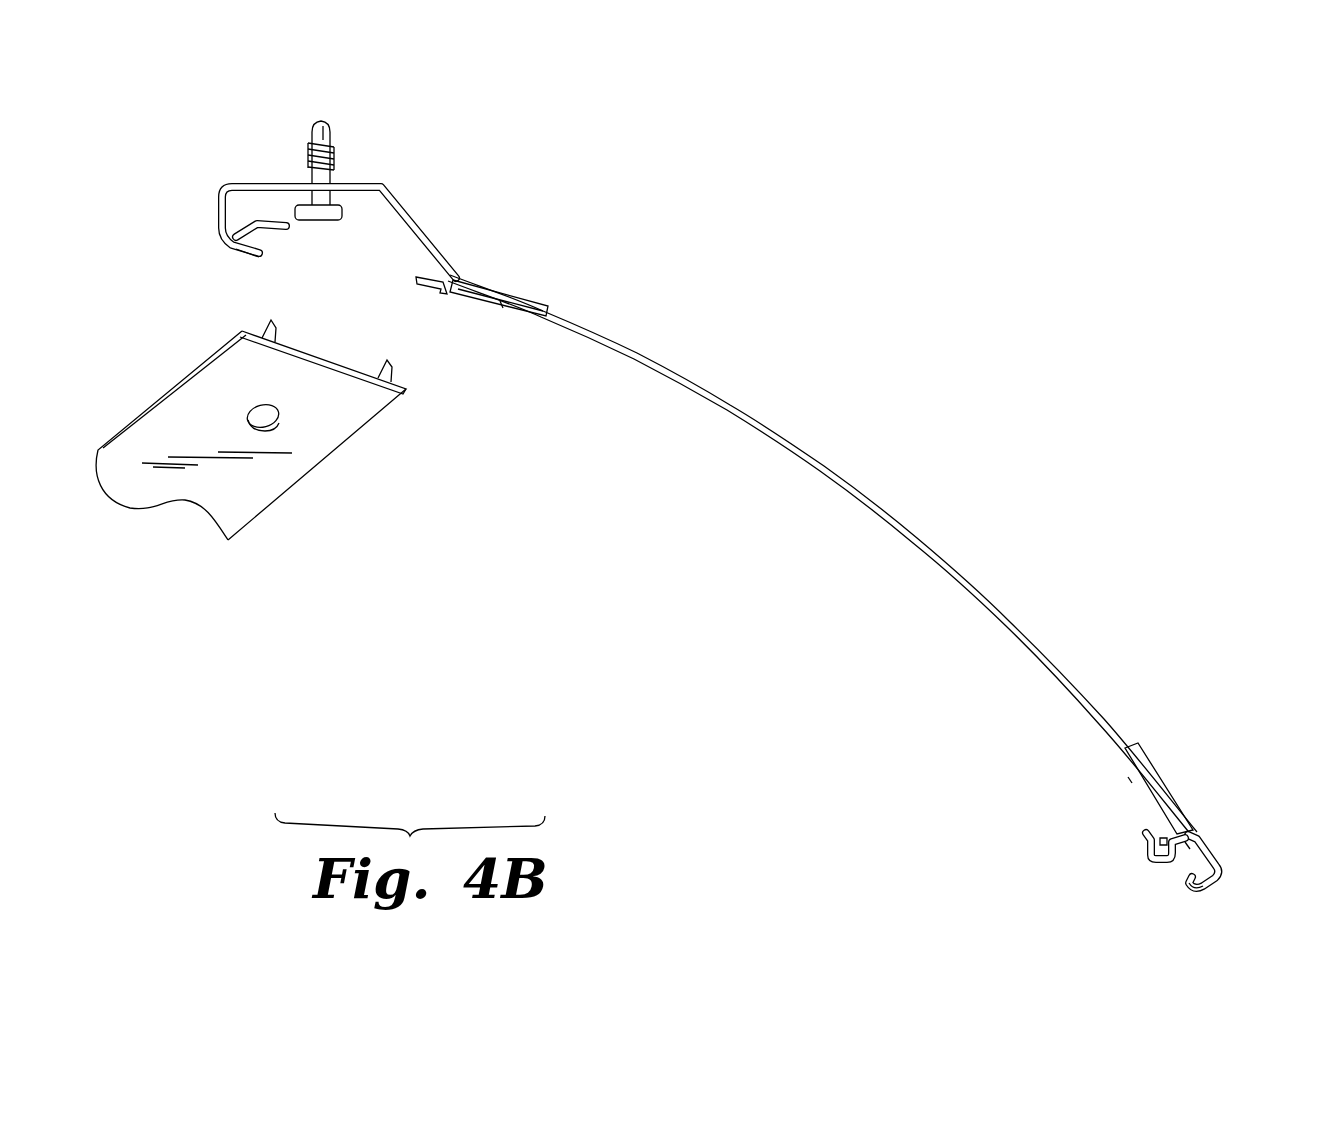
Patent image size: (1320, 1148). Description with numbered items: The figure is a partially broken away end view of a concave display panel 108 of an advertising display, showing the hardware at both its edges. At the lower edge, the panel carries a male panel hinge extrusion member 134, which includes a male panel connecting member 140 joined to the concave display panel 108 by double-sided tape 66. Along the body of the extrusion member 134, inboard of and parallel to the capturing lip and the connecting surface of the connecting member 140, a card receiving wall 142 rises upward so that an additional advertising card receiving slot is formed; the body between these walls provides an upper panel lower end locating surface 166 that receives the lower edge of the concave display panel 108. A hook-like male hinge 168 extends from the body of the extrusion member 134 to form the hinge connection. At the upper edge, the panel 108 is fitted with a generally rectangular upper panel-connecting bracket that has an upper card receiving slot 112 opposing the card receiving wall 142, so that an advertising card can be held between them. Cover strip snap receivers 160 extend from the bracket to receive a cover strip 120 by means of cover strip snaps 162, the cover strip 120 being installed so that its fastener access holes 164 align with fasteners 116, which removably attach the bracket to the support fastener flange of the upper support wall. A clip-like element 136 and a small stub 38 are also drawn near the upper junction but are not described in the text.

The stub / tab 38 is at (453, 290).
The double-sided tape 66 is at (500, 307).
The concave display panel 108 is at (773, 447).
The upper card receiving slot 112 is at (245, 247).
The fastener 116 is at (330, 125).
The cover strip 120 is at (247, 495).
The male panel hinge extrusion member 134 is at (1220, 863).
The clip 136 is at (513, 293).
The male panel connecting member 140 is at (1167, 788).
The card receiving wall 142 is at (1151, 845).
The cover strip snap receiver 160 is at (277, 233).
The cover strip snap 162 is at (256, 326).
The fastener access hole 164 is at (277, 416).
The upper panel lower end locating surface 166 is at (1187, 852).
The male hinge 168 is at (1213, 883).